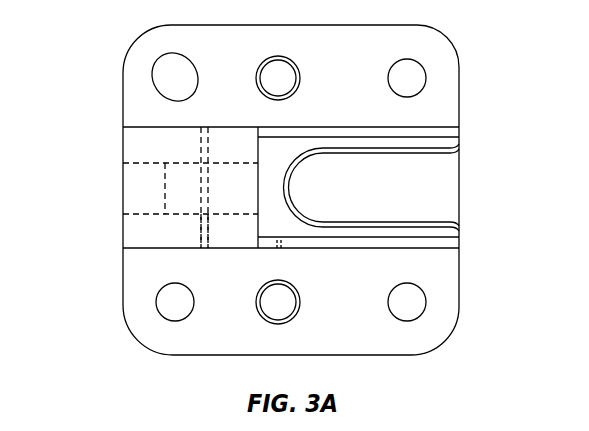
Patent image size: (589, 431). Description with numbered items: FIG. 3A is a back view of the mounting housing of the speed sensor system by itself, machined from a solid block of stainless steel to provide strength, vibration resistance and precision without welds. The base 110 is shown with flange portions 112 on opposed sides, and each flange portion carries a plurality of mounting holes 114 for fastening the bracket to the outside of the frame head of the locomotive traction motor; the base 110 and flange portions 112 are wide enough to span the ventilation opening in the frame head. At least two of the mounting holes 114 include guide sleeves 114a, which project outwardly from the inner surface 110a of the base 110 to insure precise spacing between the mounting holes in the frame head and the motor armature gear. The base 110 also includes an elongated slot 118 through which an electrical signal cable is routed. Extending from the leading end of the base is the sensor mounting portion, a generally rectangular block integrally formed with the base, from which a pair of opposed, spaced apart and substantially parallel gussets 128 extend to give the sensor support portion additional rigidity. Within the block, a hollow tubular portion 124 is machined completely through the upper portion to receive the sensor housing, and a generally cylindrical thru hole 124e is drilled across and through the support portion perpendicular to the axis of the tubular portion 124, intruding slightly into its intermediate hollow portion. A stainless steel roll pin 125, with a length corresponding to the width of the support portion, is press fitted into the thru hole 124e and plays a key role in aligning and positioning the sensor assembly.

The base 110 is at (459, 302).
The inner surface of the base 110a is at (417, 107).
The flange portions 112 is at (362, 57).
The mounting holes 114 is at (282, 80).
The guide sleeves 114a is at (265, 318).
The elongated slot 118 is at (430, 185).
The hollow tubular portion 124 is at (123, 182).
The cylindrical thru hole 124e is at (200, 147).
The roll pin 125 is at (202, 230).
The gussets 128 is at (442, 133).